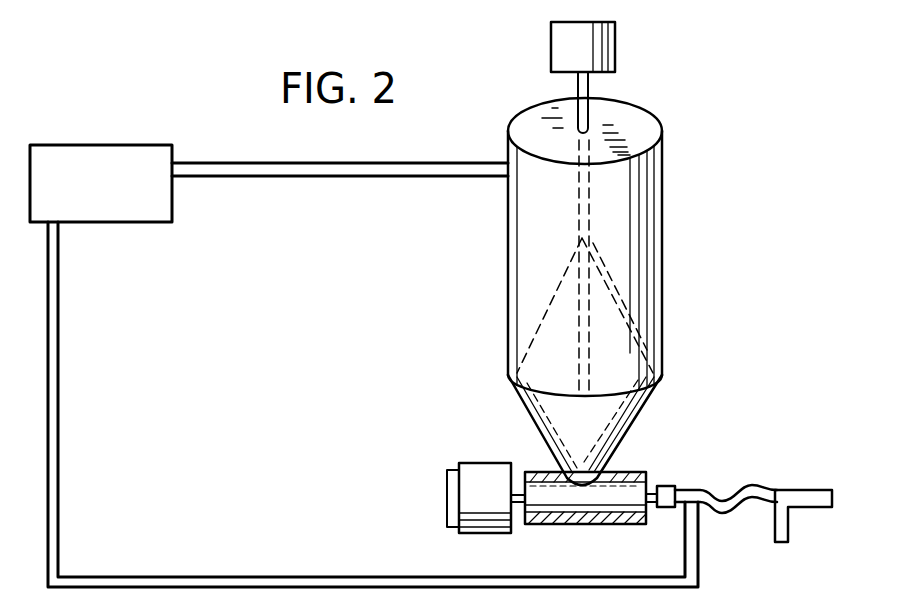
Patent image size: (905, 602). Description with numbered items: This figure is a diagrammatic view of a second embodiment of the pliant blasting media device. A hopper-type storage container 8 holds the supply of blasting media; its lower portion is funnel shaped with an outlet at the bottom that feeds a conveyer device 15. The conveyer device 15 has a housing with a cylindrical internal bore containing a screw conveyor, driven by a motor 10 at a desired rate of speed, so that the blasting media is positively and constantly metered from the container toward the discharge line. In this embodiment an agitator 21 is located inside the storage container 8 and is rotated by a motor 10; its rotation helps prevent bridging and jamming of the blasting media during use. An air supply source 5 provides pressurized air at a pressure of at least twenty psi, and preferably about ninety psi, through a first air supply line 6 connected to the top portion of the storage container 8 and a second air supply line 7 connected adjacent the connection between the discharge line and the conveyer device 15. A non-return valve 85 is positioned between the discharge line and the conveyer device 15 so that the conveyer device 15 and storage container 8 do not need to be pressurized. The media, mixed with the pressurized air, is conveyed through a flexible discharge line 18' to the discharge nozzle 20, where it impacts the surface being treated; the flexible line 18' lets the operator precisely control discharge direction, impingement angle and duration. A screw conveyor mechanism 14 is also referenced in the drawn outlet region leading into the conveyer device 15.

The air supply source 5 is at (103, 145).
The first air supply line 6 is at (344, 163).
The second air supply line 7 is at (295, 577).
The storage container 8 is at (507, 290).
The motor 10 is at (616, 50).
The screw conveyor mechanism 14 is at (617, 470).
The conveyer device 15 is at (618, 524).
The flexible discharge line 18' is at (726, 463).
The discharge nozzle 20 is at (793, 494).
The agitator 21 is at (610, 278).
The non-return valve 85 is at (663, 486).